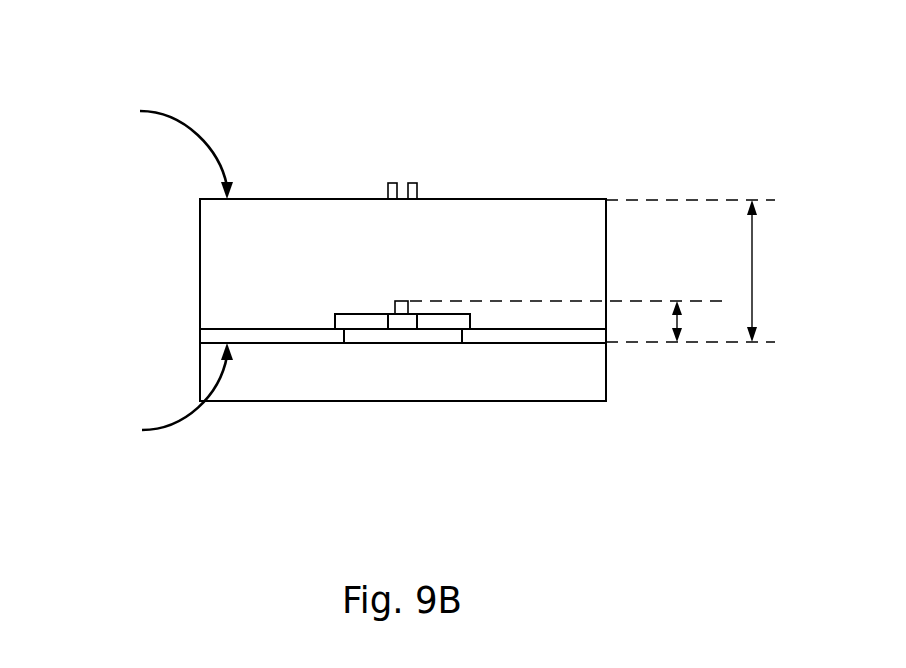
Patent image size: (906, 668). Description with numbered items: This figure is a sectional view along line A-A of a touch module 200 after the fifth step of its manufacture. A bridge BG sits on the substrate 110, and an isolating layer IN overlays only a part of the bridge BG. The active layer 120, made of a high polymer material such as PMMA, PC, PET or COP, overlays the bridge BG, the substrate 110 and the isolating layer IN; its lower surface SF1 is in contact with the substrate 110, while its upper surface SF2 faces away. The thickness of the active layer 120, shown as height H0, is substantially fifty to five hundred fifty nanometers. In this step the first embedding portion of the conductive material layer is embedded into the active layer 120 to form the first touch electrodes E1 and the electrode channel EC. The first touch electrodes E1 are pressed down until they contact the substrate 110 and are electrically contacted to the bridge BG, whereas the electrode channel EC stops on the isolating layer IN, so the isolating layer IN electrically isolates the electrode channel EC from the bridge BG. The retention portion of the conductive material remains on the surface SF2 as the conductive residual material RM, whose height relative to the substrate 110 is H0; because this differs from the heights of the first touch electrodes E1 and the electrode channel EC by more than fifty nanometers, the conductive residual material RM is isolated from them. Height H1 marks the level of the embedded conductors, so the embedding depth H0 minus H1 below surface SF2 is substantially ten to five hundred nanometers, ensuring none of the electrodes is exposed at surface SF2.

The touch module 200 is at (73, 32).
The active layer 120 is at (200, 214).
The substrate 110 is at (200, 353).
The first touch electrodes E1 is at (212, 334).
The bridge BG is at (395, 337).
The isolating layer IN is at (407, 320).
The electrode channel EC is at (400, 300).
The conductive residual material RM is at (388, 183).
The surface SF1 is at (162, 393).
The surface SF2 is at (162, 147).
The line A- A is at (400, 156).
The height H0 is at (700, 271).
The height H1 is at (566, 321).